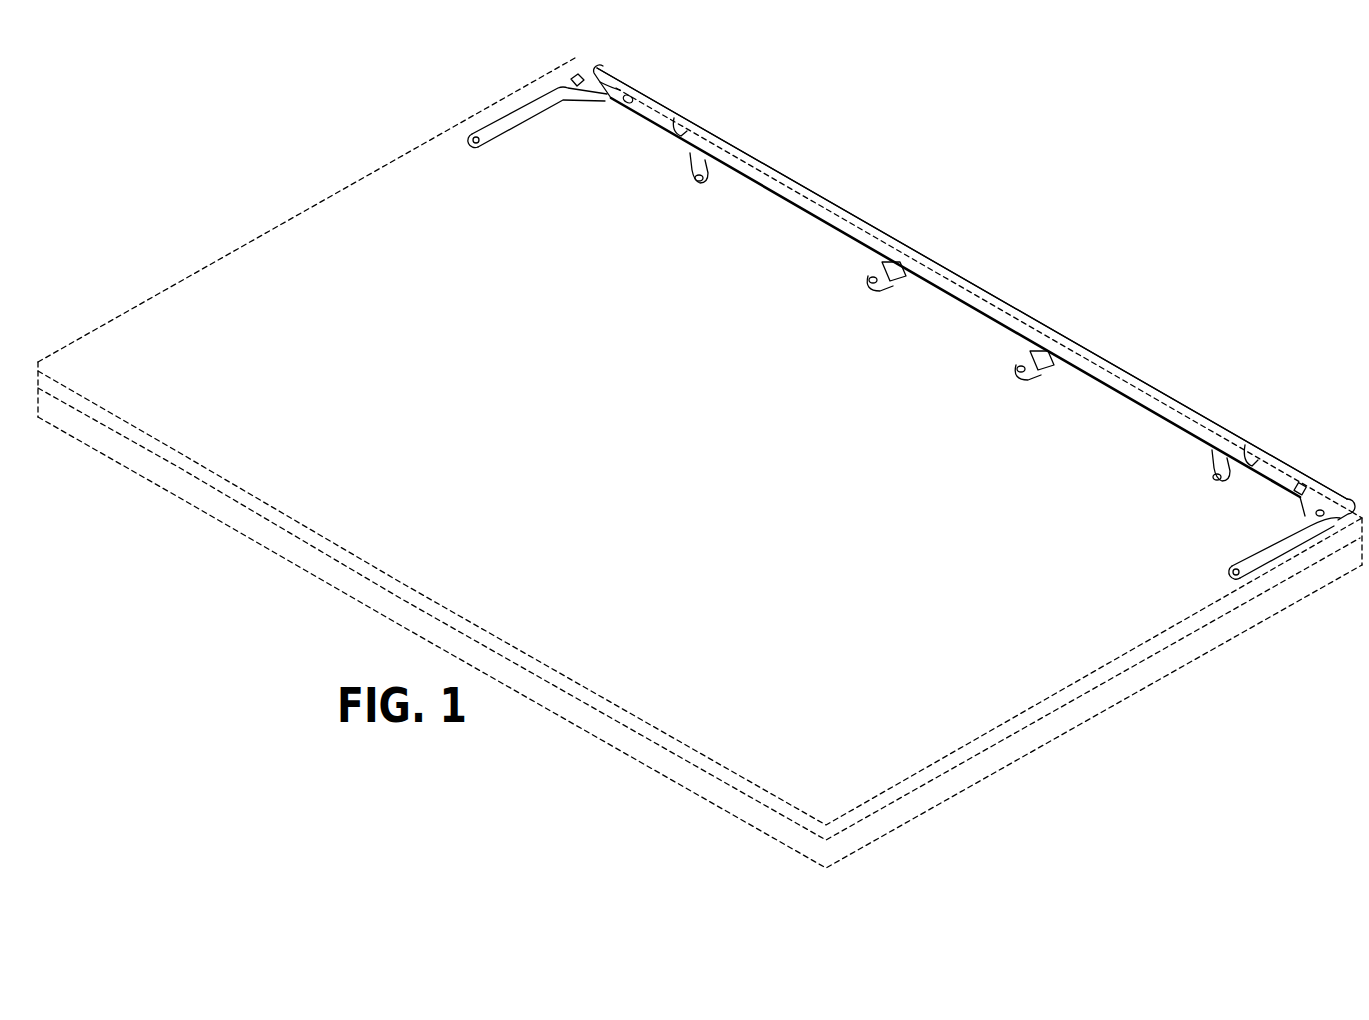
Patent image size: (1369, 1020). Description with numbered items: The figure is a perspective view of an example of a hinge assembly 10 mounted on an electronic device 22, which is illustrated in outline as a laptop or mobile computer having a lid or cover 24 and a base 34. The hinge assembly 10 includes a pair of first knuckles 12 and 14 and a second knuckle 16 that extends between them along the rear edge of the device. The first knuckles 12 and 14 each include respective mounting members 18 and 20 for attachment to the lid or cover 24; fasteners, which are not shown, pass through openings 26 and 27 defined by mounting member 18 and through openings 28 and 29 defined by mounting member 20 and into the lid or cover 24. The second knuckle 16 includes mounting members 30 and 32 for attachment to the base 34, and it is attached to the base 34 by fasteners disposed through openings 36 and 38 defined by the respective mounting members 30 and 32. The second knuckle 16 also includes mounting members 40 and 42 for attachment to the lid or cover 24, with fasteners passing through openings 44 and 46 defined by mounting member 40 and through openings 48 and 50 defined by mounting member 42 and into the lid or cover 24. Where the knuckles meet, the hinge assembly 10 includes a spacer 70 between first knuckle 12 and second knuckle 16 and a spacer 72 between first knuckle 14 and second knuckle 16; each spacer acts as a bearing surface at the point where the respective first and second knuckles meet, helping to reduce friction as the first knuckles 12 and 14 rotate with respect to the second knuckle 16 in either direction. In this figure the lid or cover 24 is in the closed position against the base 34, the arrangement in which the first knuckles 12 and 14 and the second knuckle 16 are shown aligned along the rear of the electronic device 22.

The hinge assembly 10 is at (982, 203).
The first knuckle 12 is at (1292, 468).
The first knuckle 14 is at (617, 86).
The second knuckle 16 is at (974, 263).
The mounting member 18 is at (1257, 514).
The mounting member 20 is at (534, 111).
The electronic device 22 is at (700, 463).
The lid or cover 24 is at (968, 768).
The opening 26 is at (1325, 510).
The opening 27 is at (1226, 572).
The opening 28 is at (574, 75).
The opening 29 is at (480, 150).
The mounting member 30 is at (1185, 471).
The mounting member 32 is at (664, 171).
The base 34 is at (1152, 685).
The opening 36 is at (1213, 478).
The opening 38 is at (697, 180).
The mounting member 40 is at (1020, 357).
The mounting member 42 is at (871, 270).
The opening 44 is at (1033, 378).
The opening 46 is at (1018, 364).
The opening 48 is at (883, 290).
The opening 50 is at (870, 278).
The spacer 70 is at (1246, 455).
The spacer 72 is at (677, 128).